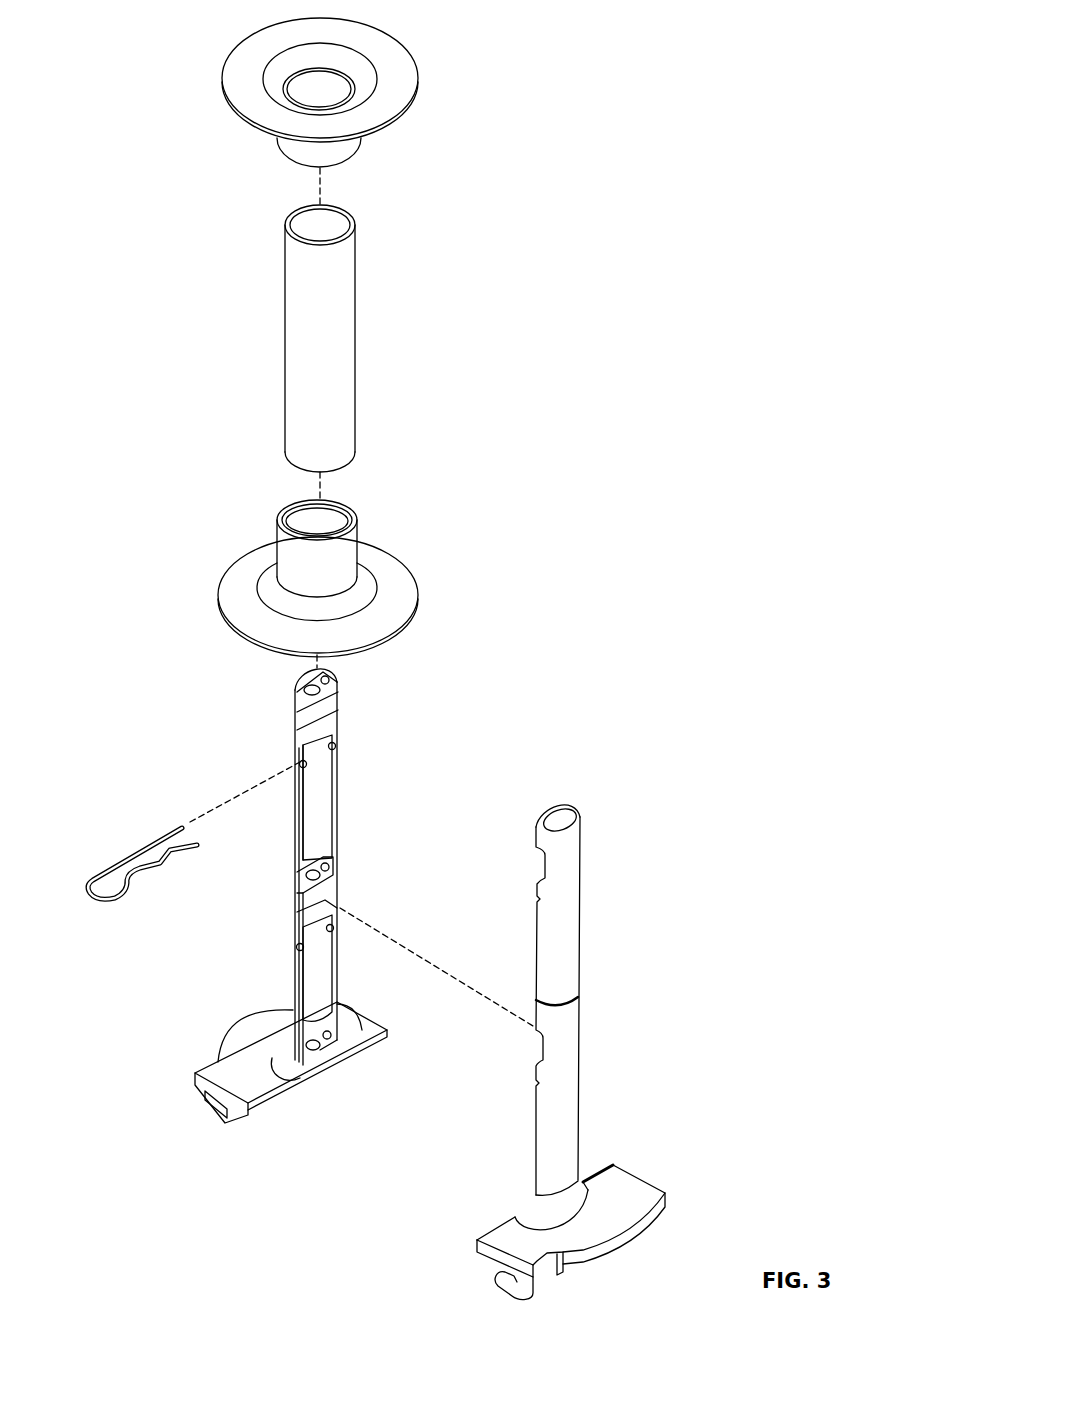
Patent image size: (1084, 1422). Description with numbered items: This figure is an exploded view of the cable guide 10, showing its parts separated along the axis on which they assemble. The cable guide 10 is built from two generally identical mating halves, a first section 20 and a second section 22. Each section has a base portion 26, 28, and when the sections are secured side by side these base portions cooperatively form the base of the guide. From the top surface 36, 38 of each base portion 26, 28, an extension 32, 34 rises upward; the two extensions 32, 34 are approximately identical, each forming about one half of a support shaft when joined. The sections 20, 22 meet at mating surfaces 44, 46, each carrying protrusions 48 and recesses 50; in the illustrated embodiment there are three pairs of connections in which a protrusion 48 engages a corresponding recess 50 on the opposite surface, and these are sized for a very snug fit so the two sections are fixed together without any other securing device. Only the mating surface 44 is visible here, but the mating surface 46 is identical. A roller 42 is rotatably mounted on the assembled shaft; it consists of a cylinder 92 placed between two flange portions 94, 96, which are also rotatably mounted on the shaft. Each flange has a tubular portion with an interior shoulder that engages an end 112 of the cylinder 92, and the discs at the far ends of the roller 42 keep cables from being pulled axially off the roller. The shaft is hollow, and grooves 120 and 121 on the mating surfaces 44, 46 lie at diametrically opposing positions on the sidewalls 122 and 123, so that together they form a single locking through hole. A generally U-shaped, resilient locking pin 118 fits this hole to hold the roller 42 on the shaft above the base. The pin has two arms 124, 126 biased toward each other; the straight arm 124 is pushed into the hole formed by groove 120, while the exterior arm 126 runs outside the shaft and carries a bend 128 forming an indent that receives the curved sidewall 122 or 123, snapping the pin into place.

The cable guide 10 is at (645, 33).
The first section 20 is at (293, 980).
The second section 22 is at (556, 953).
The base portion 26 is at (257, 1088).
The base portion 28 is at (640, 1198).
The extension 32 is at (296, 800).
The extension 34 is at (530, 823).
The top surface 36 is at (245, 1045).
The top surface 38 is at (607, 1172).
The roller 42 is at (275, 339).
The mating surface 44 is at (338, 772).
The mating surface 46 is at (530, 1133).
The protrusion 48 is at (298, 684).
The recess 50 is at (340, 688).
The cylinder 92 is at (357, 312).
The flange portion 94 is at (398, 567).
The flange portion 96 is at (397, 62).
The end of the cylinder 112 is at (347, 215).
The locking pin 118 is at (107, 905).
The groove 120 is at (340, 745).
The groove 121 is at (536, 900).
The sidewall 122 is at (299, 833).
The sidewall 123 is at (555, 895).
The straight arm 124 is at (170, 827).
The exterior arm 126 is at (155, 878).
The bend 128 is at (140, 857).